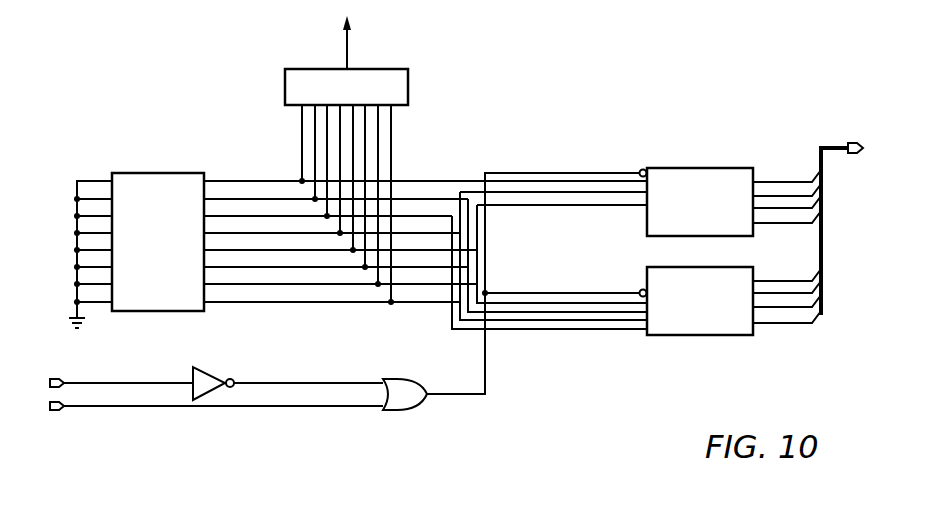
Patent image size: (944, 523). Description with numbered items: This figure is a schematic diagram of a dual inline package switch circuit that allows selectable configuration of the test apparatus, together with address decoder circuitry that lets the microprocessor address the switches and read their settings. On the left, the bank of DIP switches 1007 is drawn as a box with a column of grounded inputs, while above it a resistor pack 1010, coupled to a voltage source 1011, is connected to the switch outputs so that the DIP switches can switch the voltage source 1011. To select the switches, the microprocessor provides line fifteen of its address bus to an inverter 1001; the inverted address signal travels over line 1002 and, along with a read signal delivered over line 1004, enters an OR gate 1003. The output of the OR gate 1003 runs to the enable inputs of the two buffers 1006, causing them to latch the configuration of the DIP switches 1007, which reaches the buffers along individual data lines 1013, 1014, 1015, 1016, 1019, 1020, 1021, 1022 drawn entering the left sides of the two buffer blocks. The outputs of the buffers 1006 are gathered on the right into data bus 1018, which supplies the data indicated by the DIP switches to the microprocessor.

The inverter 1001 is at (212, 375).
The line 1002 is at (365, 362).
The OR gate 1003 is at (392, 410).
The line 1004 is at (88, 407).
The buffers 1006 is at (745, 168).
The DIP switches 1007 is at (138, 173).
The resistor pack 1010 is at (288, 79).
The voltage source 1011 is at (345, 30).
The data line 1013 is at (612, 173).
The data line 1014 is at (510, 181).
The data line 1015 is at (510, 193).
The data line 1016 is at (607, 206).
The data bus 1018 is at (838, 147).
The data line 1019 is at (602, 330).
The data line 1020 is at (510, 321).
The data line 1021 is at (518, 302).
The data line 1022 is at (606, 292).